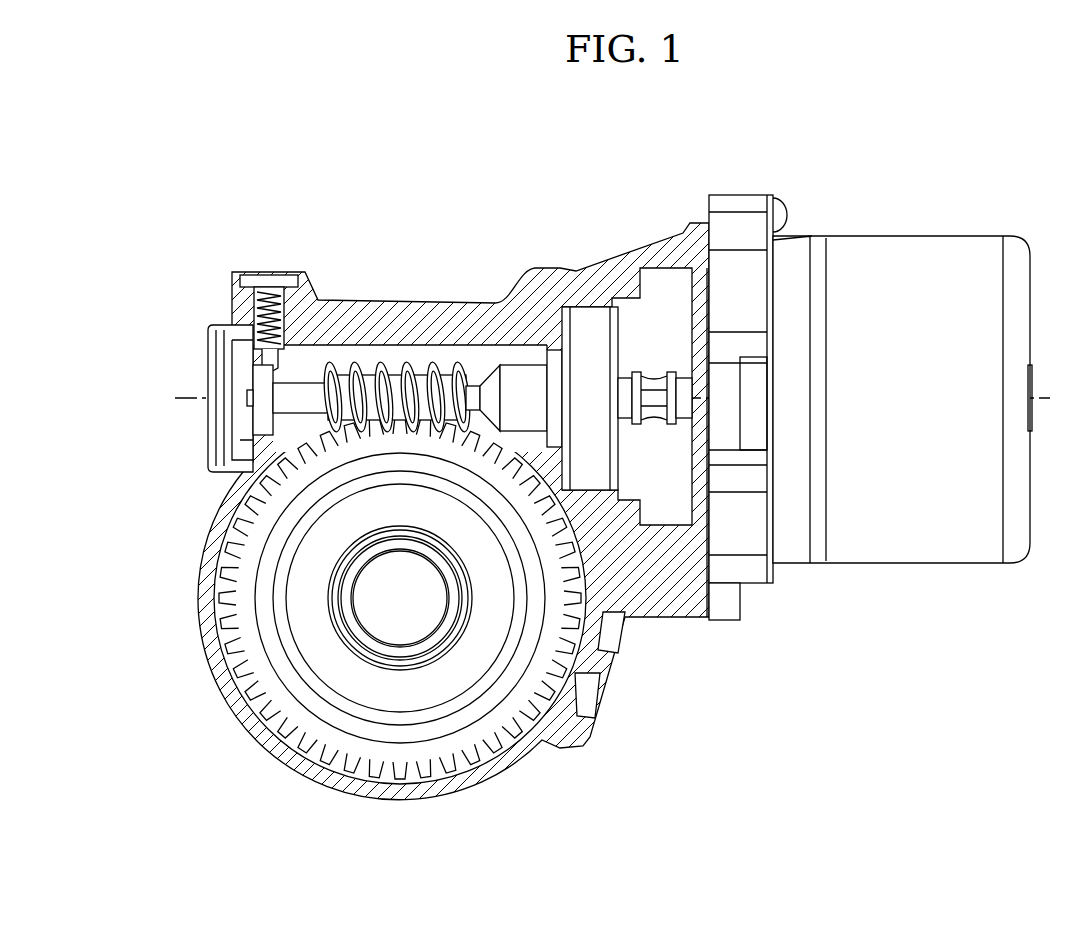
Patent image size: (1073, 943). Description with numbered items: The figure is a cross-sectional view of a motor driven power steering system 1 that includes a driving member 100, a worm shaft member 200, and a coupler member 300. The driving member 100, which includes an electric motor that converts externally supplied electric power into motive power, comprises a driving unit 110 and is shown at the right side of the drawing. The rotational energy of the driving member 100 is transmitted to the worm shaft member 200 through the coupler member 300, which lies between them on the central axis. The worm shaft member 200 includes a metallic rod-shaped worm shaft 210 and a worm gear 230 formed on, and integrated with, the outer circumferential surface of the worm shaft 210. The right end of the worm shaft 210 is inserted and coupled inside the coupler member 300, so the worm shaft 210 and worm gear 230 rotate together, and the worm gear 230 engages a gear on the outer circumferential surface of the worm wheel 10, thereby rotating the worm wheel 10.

The actuator 1 is at (261, 124).
The worm wheel 10 is at (548, 652).
The driving member 100 is at (980, 210).
The driving unit 110 is at (905, 272).
The worm shaft member 200 is at (398, 354).
The worm shaft 210 is at (478, 392).
The worm gear 230 is at (340, 362).
The coupler member 300 is at (655, 345).